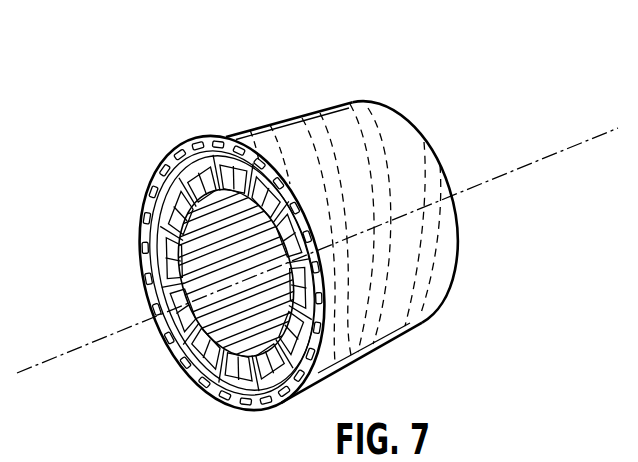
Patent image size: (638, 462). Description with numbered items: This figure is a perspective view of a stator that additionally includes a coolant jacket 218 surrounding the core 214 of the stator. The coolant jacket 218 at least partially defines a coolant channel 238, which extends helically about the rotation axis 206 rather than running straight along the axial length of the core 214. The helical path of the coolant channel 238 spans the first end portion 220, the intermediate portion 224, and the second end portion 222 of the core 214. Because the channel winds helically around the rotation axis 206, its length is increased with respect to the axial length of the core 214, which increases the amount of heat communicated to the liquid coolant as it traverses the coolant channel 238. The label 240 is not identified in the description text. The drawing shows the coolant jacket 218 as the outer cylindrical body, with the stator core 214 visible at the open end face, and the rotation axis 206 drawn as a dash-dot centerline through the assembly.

The rotation axis 206 is at (512, 177).
The core 214 is at (165, 150).
The coolant jacket 218 is at (314, 388).
The first end portion 220 is at (177, 118).
The second end portion 222 is at (372, 82).
The intermediate portion 224 is at (266, 98).
The coolant channel 238 is at (336, 234).
The stator bore 240 is at (124, 402).